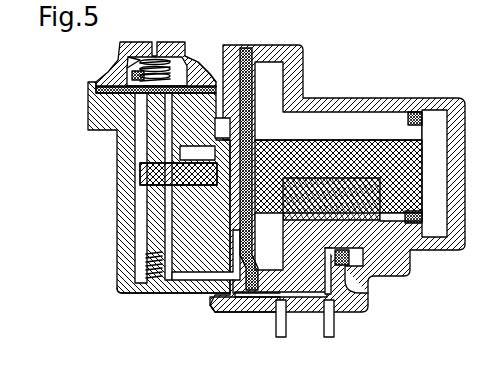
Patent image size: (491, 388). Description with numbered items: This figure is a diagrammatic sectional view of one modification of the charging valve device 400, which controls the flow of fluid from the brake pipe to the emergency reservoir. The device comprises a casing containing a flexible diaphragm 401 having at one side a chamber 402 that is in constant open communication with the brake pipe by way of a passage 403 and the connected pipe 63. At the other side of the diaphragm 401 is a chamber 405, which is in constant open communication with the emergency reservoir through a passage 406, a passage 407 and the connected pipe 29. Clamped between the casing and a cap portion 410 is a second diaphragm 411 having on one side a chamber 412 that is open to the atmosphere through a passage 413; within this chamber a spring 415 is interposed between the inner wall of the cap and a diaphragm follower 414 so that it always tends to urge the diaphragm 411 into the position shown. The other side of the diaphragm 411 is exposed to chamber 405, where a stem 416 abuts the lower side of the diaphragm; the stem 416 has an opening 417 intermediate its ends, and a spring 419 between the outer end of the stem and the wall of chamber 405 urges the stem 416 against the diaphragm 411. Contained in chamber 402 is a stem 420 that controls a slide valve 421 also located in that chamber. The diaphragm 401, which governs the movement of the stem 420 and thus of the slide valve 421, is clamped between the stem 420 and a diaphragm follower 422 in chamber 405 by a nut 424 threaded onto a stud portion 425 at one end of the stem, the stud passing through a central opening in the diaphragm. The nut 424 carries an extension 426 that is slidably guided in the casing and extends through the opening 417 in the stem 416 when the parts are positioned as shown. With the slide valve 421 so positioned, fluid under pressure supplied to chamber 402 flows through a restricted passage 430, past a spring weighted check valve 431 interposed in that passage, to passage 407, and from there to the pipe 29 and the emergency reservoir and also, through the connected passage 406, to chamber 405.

The charging valve device 400 is at (299, 41).
The flexible diaphragm 401 is at (257, 45).
The chamber 402 is at (313, 120).
The passage 403 is at (258, 310).
The chamber 405 is at (143, 210).
The passage 406 is at (211, 297).
The passage 407 is at (282, 338).
The cap portion 410 is at (163, 54).
The diaphragm 411 is at (187, 70).
The chamber 412 is at (133, 77).
The passage 413 is at (152, 57).
The diaphragm follower 414 is at (112, 88).
The spring 415 is at (140, 62).
The stem 416 is at (150, 141).
The opening 417 is at (153, 156).
The spring 419 is at (145, 262).
The stem 420 is at (361, 128).
The slide valve 421 is at (350, 190).
The diaphragm follower 422 is at (220, 250).
The nut 424 is at (201, 125).
The stud portion 425 is at (253, 148).
The extension 426 is at (150, 178).
The restricted passage 430 is at (412, 224).
The spring weighted check valve 431 is at (345, 280).
The pipe 63 is at (274, 325).
The pipe 29 is at (323, 325).